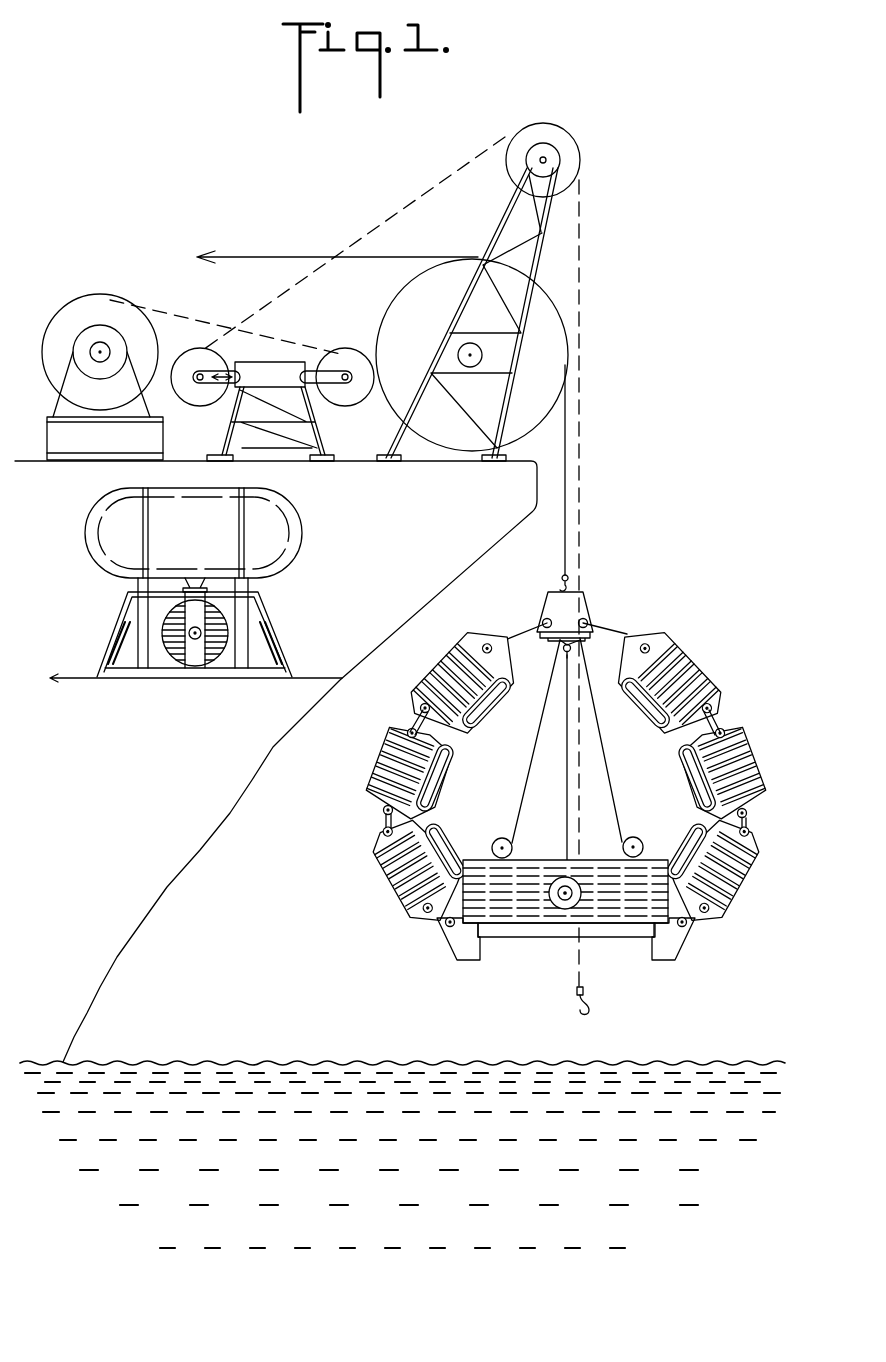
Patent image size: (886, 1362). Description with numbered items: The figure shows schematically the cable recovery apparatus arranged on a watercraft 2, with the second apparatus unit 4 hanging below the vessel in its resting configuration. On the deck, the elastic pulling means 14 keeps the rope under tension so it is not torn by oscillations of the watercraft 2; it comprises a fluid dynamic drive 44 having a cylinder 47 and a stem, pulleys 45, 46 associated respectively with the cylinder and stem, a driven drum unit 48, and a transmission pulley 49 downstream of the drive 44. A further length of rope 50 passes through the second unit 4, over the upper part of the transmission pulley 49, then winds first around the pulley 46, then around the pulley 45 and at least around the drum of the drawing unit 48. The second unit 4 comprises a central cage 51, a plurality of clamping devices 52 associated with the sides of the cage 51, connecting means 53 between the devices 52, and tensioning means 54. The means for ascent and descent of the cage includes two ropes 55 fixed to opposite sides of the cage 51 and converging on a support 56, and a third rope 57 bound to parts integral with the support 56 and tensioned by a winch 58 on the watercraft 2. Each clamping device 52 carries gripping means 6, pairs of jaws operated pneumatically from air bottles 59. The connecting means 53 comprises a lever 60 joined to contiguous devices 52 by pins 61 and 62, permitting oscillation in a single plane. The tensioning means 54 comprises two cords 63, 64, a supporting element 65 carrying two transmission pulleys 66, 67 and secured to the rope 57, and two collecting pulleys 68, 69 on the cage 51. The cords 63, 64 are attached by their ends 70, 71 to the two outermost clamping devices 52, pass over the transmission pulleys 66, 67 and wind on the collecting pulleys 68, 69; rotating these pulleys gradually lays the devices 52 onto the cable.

The watercraft 2 is at (531, 460).
The second apparatus unit 4 is at (600, 615).
The gripping means 6 is at (707, 670).
The elastic pulling means 14 is at (185, 270).
The fluid dynamic drive 44 is at (272, 372).
The pulley 45 is at (345, 362).
The pulley 46 is at (193, 362).
The cylinder 47 is at (318, 358).
The driven drum unit 48 is at (117, 310).
The transmission pulley 49 is at (558, 135).
The further length of rope 50 is at (580, 222).
The central cage 51 is at (528, 870).
The clamping device 52 is at (362, 786).
The connecting means 53 is at (395, 719).
The tensioning means 54 is at (536, 575).
The rope 55 is at (567, 816).
The support 56 is at (558, 650).
The third rope 57 is at (565, 433).
The winch 58 is at (550, 333).
The air bottle 59 is at (655, 710).
The lever 60 is at (423, 720).
The pin 61 is at (420, 705).
The pin 62 is at (403, 735).
The cord 63 is at (608, 768).
The cord 64 is at (522, 783).
The supporting element 65 is at (576, 594).
The transmission pulley 66 is at (652, 600).
The transmission pulley 67 is at (541, 614).
The collecting pulley 68 is at (640, 841).
The collecting pulley 69 is at (502, 838).
The cord end 70 is at (635, 632).
The cord end 71 is at (503, 636).